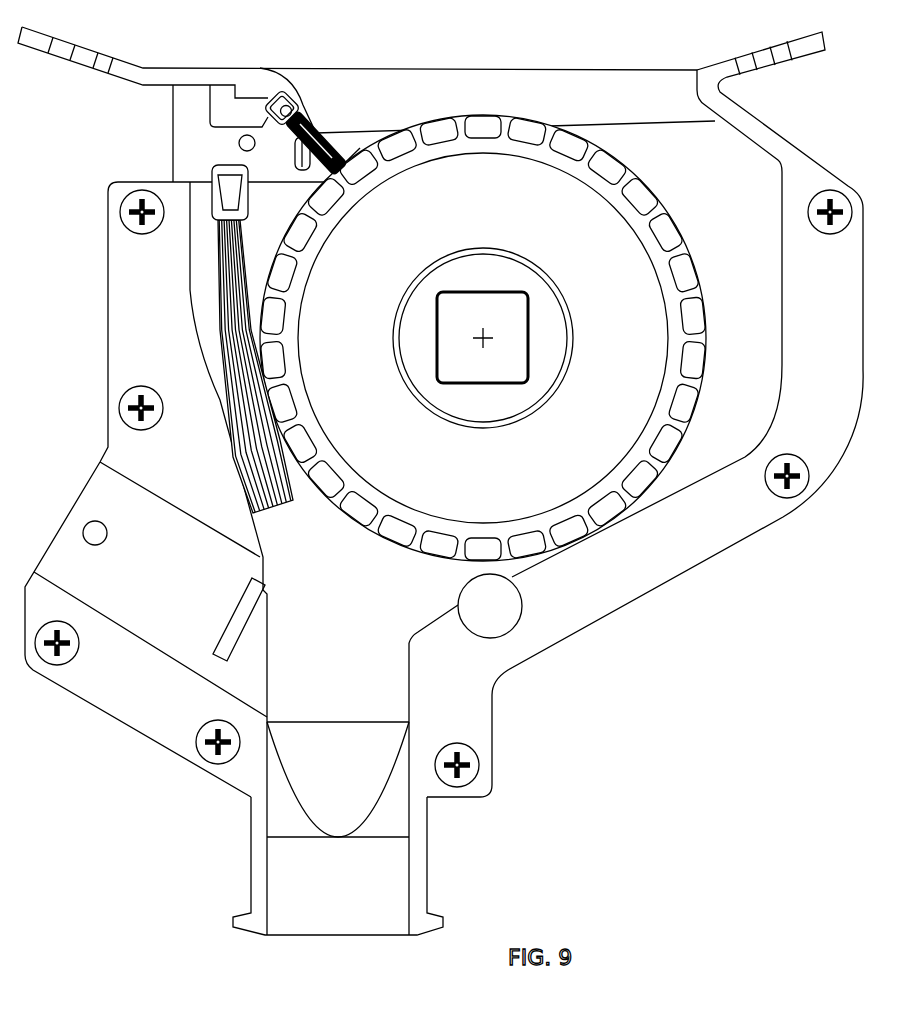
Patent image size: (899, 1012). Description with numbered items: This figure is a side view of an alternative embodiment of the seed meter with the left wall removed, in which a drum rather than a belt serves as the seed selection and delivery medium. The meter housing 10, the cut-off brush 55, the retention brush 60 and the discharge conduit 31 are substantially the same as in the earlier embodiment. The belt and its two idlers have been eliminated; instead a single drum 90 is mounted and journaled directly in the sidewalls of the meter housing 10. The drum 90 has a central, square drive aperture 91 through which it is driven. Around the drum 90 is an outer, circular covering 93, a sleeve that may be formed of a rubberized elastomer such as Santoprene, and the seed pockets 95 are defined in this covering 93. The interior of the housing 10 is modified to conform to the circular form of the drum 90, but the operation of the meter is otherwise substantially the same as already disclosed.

The meter housing 10 is at (795, 137).
The discharge conduit 31 is at (427, 875).
The cut-off brush 55 is at (305, 115).
The retention brush 60 is at (218, 255).
The drum 90 is at (569, 237).
The central square drive aperture 91 is at (440, 298).
The outer circular covering 93 is at (605, 190).
The seed pockets 95 is at (645, 197).